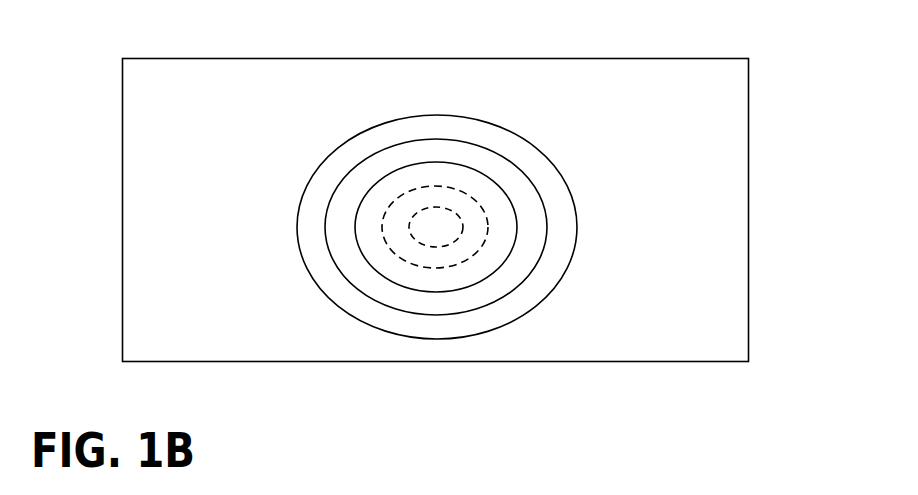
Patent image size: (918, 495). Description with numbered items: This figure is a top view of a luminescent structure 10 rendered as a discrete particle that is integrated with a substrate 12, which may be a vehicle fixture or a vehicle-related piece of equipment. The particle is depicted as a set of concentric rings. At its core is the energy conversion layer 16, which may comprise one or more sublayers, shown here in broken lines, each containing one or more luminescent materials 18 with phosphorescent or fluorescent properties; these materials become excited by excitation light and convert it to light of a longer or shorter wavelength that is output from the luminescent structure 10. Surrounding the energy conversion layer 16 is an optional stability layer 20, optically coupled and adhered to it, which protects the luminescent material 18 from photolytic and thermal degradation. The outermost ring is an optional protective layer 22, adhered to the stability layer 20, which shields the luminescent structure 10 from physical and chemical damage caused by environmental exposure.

The luminescent structure 10 is at (340, 123).
The substrate 12 is at (749, 162).
The energy conversion layer 16 is at (492, 273).
The luminescent material 18 is at (422, 242).
The stability layer 20 is at (500, 153).
The protective layer 22 is at (473, 116).